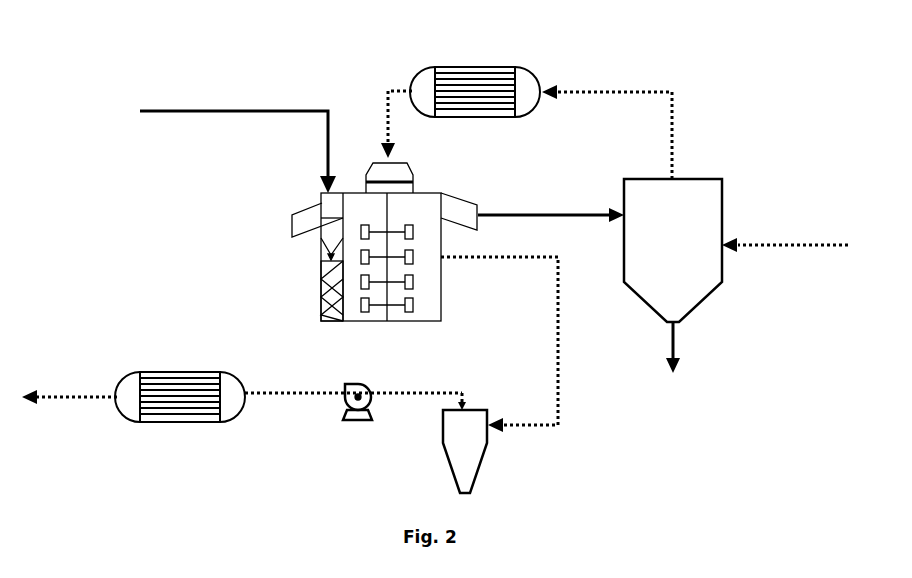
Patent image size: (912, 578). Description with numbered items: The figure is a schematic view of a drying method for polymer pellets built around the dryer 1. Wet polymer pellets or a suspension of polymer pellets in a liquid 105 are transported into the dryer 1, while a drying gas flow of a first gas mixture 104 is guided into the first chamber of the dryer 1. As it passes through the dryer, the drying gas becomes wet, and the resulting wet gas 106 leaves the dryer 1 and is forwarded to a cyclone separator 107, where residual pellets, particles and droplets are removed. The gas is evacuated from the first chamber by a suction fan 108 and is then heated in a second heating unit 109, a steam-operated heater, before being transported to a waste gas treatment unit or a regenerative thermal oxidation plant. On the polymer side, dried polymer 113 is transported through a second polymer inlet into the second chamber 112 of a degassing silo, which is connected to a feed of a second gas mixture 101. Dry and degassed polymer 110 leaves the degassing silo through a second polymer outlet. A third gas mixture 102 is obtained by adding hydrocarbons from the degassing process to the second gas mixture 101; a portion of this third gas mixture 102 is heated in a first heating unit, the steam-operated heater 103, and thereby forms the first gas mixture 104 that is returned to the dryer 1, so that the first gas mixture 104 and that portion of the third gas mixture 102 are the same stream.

The dryer 1 is at (300, 270).
The second gas mixture 101 is at (790, 247).
The third gas mixture 102 is at (675, 120).
The steam-operated heater 103 is at (477, 67).
The first gas mixture 104 is at (387, 100).
The wet polymer pellets or suspension of polymer pellets in a liquid 105 is at (172, 110).
The wet gas 106 is at (558, 352).
The cyclone separator 107 is at (467, 458).
The suction fan 108 is at (357, 421).
The second heating unit 109 is at (197, 408).
The dry and degassed polymer 110 is at (678, 342).
The second chamber 112 is at (690, 220).
The dried polymer 113 is at (547, 212).